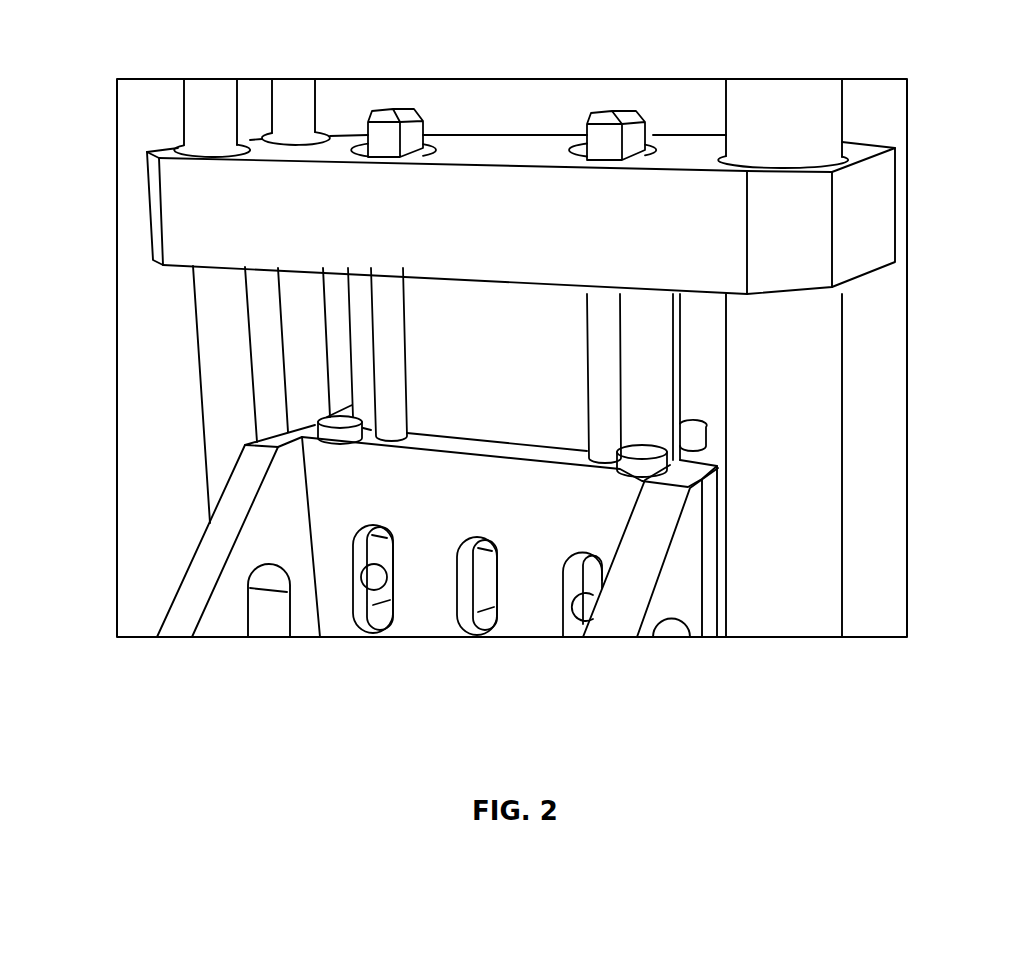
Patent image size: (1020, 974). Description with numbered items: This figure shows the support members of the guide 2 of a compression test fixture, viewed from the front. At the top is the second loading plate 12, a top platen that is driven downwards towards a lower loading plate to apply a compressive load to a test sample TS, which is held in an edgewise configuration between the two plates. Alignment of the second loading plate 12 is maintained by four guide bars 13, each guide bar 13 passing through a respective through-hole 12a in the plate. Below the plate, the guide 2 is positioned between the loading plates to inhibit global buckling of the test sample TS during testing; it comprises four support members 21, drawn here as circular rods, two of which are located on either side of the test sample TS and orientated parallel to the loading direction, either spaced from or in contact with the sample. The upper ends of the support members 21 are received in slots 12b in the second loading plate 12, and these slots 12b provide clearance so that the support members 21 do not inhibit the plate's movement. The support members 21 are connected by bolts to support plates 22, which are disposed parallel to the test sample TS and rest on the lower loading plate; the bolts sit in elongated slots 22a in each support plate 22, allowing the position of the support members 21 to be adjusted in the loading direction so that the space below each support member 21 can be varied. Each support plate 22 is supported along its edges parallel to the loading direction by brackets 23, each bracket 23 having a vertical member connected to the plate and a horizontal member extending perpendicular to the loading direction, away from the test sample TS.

The guide 2 is at (503, 369).
The second loading plate 12 is at (178, 212).
The through-hole 12a is at (183, 148).
The slot 12b is at (442, 148).
The guide bar 13 is at (218, 123).
The test sample TS is at (458, 375).
The support member 21 is at (393, 393).
The support plate 22 is at (385, 492).
The elongated slot 22a is at (360, 563).
The bracket 23 is at (197, 578).